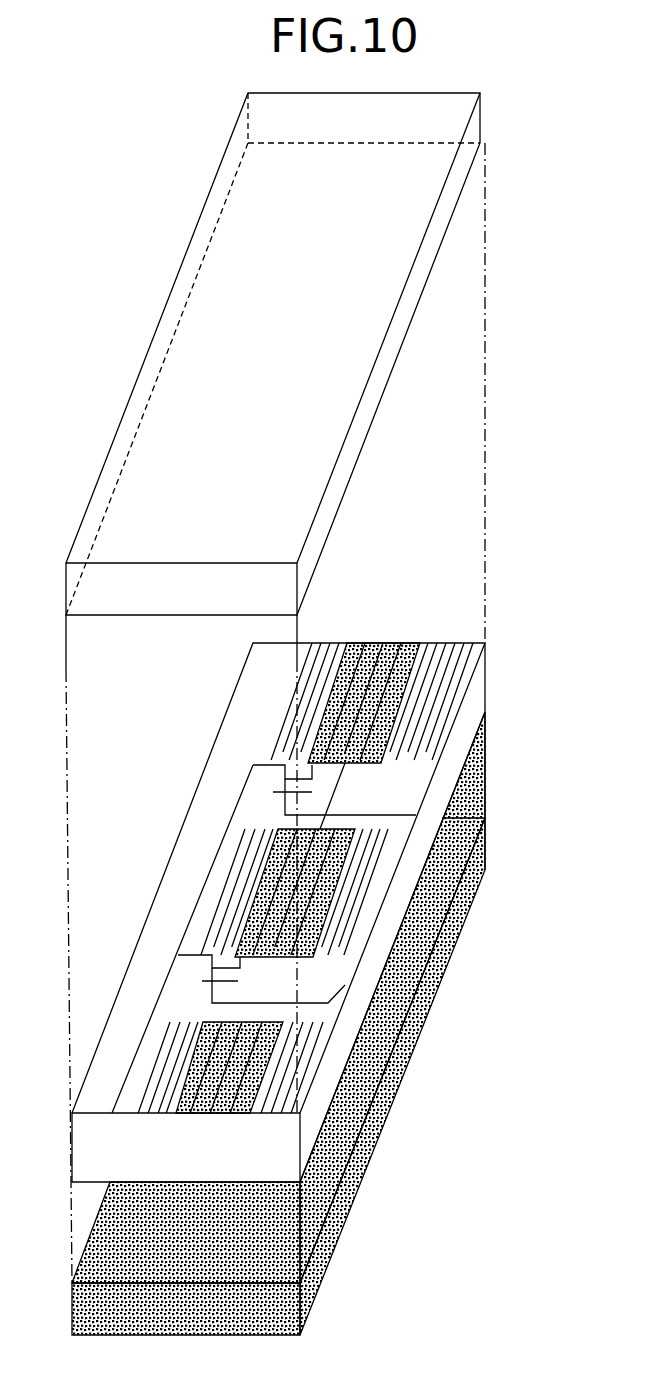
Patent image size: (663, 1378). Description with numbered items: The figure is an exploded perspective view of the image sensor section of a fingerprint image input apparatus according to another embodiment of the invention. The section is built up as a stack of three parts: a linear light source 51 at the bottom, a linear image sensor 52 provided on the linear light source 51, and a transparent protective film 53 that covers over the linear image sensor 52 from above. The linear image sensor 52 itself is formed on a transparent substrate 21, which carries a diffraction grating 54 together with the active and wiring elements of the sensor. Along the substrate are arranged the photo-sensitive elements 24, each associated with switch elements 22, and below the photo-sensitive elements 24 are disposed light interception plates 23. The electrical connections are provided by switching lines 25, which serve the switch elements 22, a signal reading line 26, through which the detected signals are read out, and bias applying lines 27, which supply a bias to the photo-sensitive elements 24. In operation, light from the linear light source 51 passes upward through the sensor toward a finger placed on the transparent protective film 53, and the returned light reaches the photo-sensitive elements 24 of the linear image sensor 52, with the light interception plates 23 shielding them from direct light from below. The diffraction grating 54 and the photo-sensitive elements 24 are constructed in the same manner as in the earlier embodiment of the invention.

The transparent substrate 21 is at (323, 1088).
The switch elements 22 is at (222, 974).
The light interception plates 23 is at (415, 703).
The photo-sensitive elements 24 is at (420, 665).
The switching lines 25 is at (345, 985).
The signal reading line 26 is at (253, 765).
The bias applying lines 27 is at (337, 793).
The linear light source 51 is at (373, 1187).
The linear image sensor 52 is at (412, 630).
The transparent protective film 53 is at (358, 440).
The diffraction grating 54 is at (380, 855).